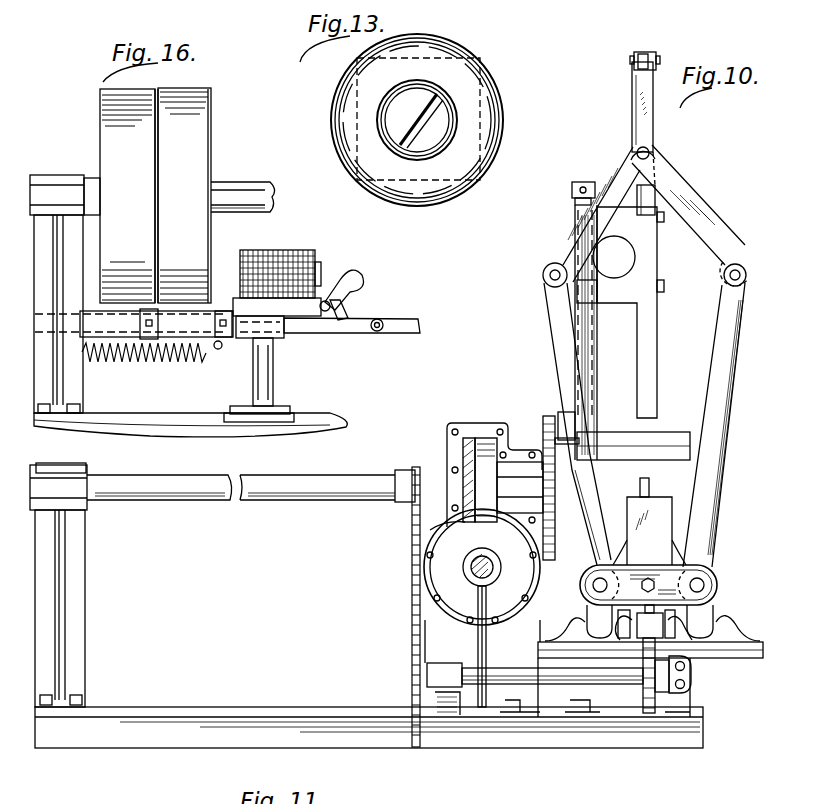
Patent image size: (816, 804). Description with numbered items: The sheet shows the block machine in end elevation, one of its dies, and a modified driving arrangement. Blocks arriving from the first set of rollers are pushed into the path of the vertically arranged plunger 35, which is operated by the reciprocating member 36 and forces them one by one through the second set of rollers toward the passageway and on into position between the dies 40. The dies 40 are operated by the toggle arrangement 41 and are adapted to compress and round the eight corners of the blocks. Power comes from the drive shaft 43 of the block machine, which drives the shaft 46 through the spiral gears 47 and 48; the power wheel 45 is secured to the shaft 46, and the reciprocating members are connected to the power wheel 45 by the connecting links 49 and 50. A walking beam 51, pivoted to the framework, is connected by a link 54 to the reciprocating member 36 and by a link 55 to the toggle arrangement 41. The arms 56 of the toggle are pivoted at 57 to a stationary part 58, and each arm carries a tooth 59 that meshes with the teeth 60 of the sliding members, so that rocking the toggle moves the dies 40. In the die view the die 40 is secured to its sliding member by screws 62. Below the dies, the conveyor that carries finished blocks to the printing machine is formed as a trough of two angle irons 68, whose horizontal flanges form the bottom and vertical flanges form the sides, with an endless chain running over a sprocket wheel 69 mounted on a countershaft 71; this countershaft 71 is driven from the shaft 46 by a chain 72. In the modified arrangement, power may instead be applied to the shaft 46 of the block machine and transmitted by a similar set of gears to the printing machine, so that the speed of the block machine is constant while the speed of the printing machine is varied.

In FIG. 10, the vertically arranged plunger 35 is at (660, 368).
In FIG. 10, the reciprocating member 36 is at (574, 220).
In FIG. 13, the dies 40 is at (504, 124).
In FIG. 10, the dies 40 is at (648, 612).
In FIG. 10, the toggle arrangement 41 is at (729, 238).
In FIG. 10, the drive shaft 43 is at (470, 572).
In FIG. 10, the power wheel 45 is at (545, 418).
In FIG. 16, the shaft 46 is at (250, 188).
In FIG. 10, the shaft 46 is at (225, 502).
In FIG. 10, the spiral gear 47 is at (460, 448).
In FIG. 10, the spiral gear 48 is at (455, 538).
In FIG. 10, the connecting link 49 is at (565, 426).
In FIG. 10, the connecting link 50 is at (572, 360).
In FIG. 10, the walking beam 51 is at (645, 53).
In FIG. 10, the link 54 is at (645, 180).
In FIG. 10, the link 55 is at (650, 130).
In FIG. 10, the arms of the toggle 56 is at (552, 338).
In FIG. 10, the pivot 57 is at (606, 582).
In FIG. 10, the stationary part 58 is at (665, 514).
In FIG. 10, the tooth 59 is at (587, 612).
In FIG. 10, the teeth of the sliding members 60 is at (590, 630).
In FIG. 13, the screws 62 is at (415, 150).
In FIG. 10, the angle irons 68 is at (634, 645).
In FIG. 10, the sprocket wheel 69 is at (652, 713).
In FIG. 10, the countershaft 71 is at (556, 685).
In FIG. 10, the chain 72 is at (450, 618).